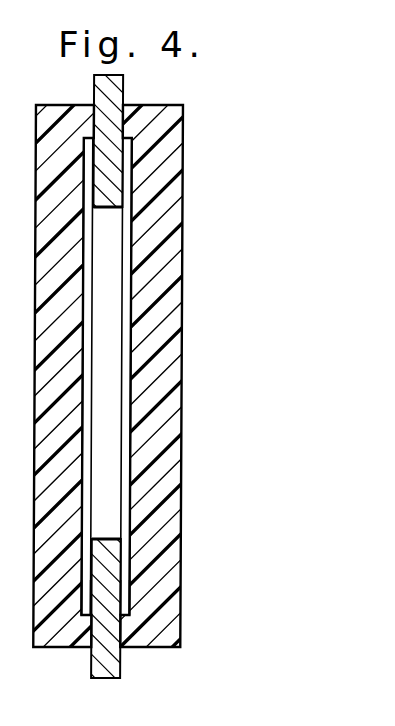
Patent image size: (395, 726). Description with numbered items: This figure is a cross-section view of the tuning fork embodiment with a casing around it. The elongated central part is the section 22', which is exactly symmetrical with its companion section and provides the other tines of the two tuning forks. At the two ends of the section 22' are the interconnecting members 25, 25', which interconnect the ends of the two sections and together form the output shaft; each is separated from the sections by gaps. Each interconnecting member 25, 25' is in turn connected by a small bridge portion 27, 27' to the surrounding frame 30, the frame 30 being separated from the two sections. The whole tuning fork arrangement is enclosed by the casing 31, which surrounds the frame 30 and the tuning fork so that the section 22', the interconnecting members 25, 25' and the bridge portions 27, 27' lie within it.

The section 22' is at (161, 373).
The interconnecting member 25 is at (138, 376).
The interconnecting member 25' is at (137, 570).
The bridge portion 27 is at (167, 155).
The bridge portion 27' is at (173, 565).
The frame 30 is at (119, 98).
The casing 31 is at (182, 338).